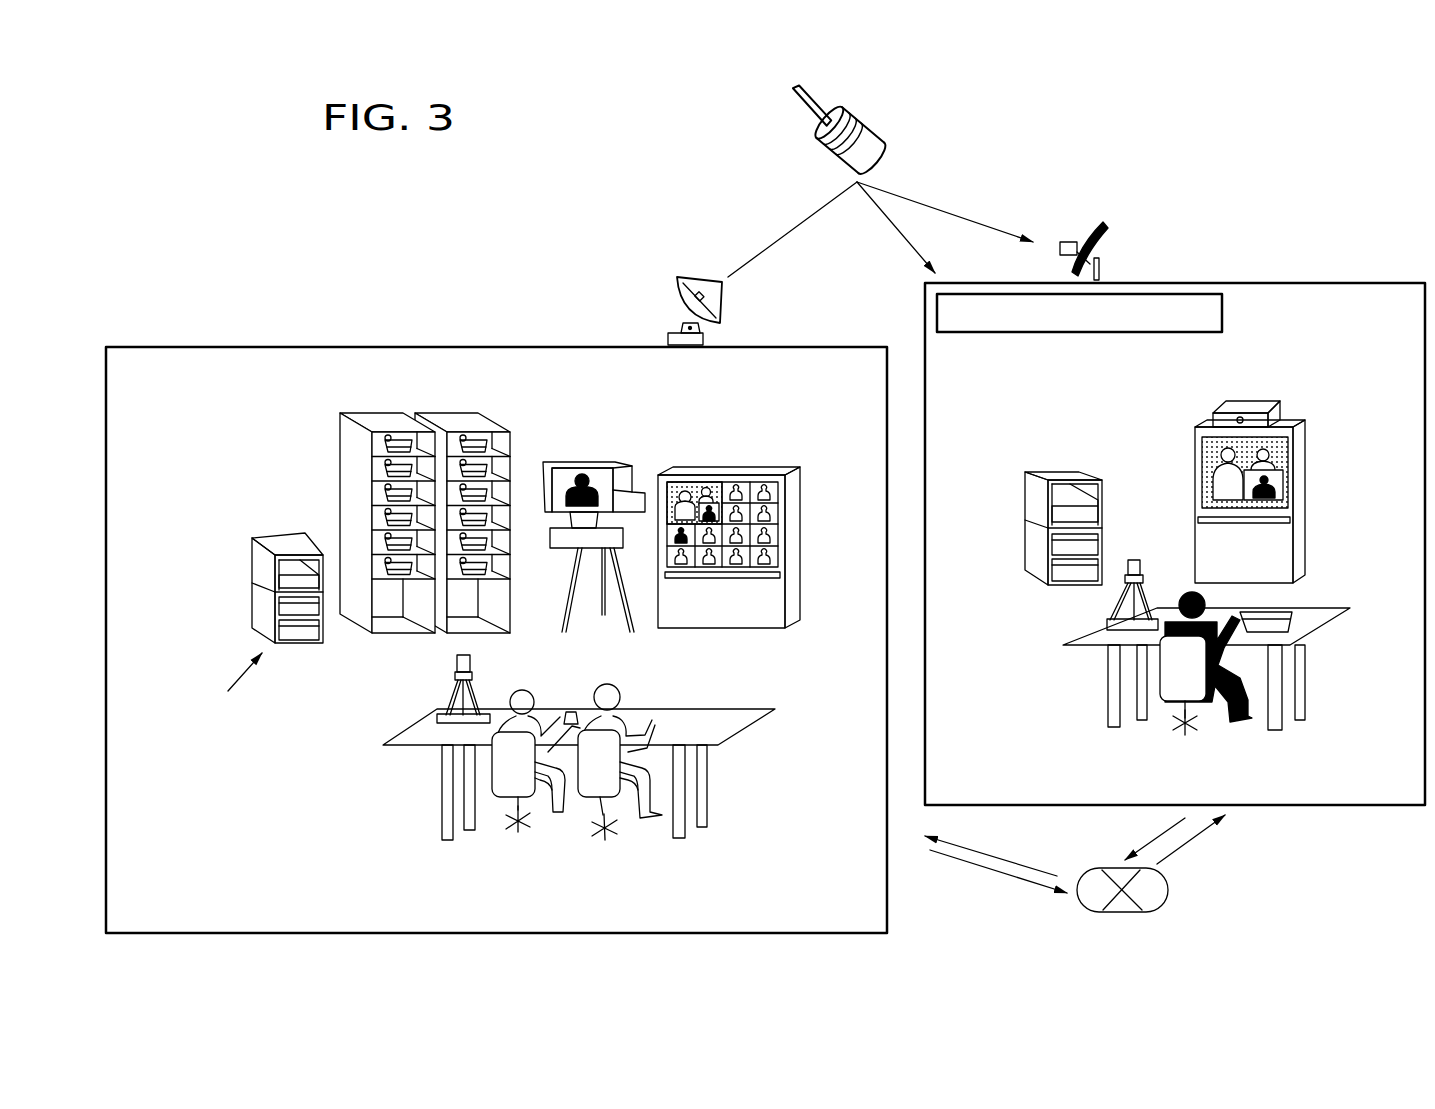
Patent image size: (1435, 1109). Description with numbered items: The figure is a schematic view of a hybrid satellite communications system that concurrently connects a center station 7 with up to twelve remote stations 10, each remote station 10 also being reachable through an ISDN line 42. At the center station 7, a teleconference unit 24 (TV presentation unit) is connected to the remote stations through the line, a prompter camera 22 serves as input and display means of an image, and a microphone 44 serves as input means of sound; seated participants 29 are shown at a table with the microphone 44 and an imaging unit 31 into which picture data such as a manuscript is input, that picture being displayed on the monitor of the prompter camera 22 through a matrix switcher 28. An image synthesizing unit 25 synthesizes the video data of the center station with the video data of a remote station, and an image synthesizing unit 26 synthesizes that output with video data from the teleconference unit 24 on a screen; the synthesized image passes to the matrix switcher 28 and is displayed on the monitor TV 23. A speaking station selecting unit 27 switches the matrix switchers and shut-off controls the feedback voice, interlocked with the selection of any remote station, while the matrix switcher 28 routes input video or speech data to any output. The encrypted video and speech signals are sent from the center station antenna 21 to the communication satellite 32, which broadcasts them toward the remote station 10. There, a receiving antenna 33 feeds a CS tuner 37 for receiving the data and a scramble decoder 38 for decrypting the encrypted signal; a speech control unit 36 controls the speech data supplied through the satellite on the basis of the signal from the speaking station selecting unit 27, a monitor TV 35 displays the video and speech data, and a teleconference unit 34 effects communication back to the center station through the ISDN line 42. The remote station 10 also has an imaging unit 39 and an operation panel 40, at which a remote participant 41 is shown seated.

The center station 7 is at (367, 344).
The remote station 10 is at (1290, 280).
The center station antenna 21 is at (680, 290).
The prompter camera 22 is at (600, 461).
The monitor TV 23 is at (766, 468).
The teleconference unit 24 is at (460, 432).
The image synthesizing unit 25 is at (329, 723).
The image synthesizing unit 26 is at (329, 777).
The speaking station selecting unit 27 is at (375, 830).
The matrix switcher 28 is at (375, 870).
The participants at center station 29 is at (643, 822).
The imaging unit 31 is at (456, 684).
The communication satellite 32 is at (882, 124).
The receiving antenna 33 is at (1102, 226).
The teleconference unit 34 is at (1284, 410).
The monitor TV 35 is at (1195, 427).
The speech control unit 36 is at (1223, 312).
The CS tuner 37 is at (1073, 368).
The scramble decoder 38 is at (1035, 476).
The imaging unit 39 is at (1122, 600).
The operation panel 40 is at (1320, 609).
The participant at remote station 41 is at (1242, 720).
The ISDN line 42 is at (1170, 890).
The microphone 44 is at (566, 710).